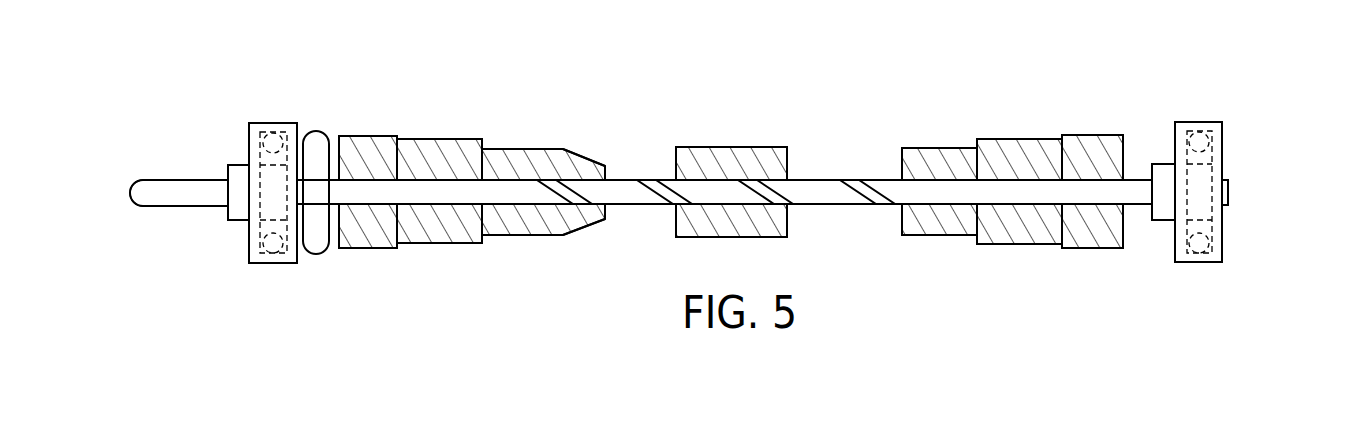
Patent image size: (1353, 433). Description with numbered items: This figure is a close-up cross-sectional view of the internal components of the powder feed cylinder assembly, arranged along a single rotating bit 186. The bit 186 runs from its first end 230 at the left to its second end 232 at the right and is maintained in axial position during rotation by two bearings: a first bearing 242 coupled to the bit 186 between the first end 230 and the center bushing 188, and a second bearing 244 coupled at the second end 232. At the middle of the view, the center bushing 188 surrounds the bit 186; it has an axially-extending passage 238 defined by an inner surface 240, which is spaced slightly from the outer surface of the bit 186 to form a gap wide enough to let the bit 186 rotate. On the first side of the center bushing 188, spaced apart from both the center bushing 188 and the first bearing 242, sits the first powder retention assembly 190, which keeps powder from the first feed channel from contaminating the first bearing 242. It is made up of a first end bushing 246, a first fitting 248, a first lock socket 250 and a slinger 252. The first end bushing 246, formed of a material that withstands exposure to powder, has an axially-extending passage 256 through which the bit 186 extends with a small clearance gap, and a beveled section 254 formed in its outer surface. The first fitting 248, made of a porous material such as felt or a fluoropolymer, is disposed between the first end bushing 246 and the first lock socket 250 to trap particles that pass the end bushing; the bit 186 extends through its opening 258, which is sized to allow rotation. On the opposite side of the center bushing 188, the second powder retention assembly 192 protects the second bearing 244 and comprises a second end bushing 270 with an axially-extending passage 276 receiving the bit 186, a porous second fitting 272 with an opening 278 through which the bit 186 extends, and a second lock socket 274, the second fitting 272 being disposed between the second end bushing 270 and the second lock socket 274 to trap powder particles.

The bit 186 is at (176, 180).
The first end of the bit 230 is at (155, 207).
The second end of the bit 232 is at (1230, 190).
The first bearing 242 is at (269, 264).
The second bearing 244 is at (1199, 263).
The slinger 252 is at (314, 255).
The first powder retention assembly 190 is at (479, 167).
The first lock socket 250 is at (365, 146).
The first fitting 248 is at (439, 225).
The opening 258 is at (452, 192).
The first end bushing 246 is at (523, 228).
The axially-extending passage 256 is at (528, 176).
The beveled section 254 is at (588, 226).
The inner surface 240 is at (683, 186).
The center bushing 188 is at (752, 156).
The axially-extending passage 238 is at (790, 205).
The second powder retention assembly 192 is at (1018, 157).
The second end bushing 270 is at (932, 150).
The axially-extending passage 276 is at (935, 206).
The second fitting 272 is at (1010, 146).
The opening 278 is at (1025, 206).
The second lock socket 274 is at (1100, 240).